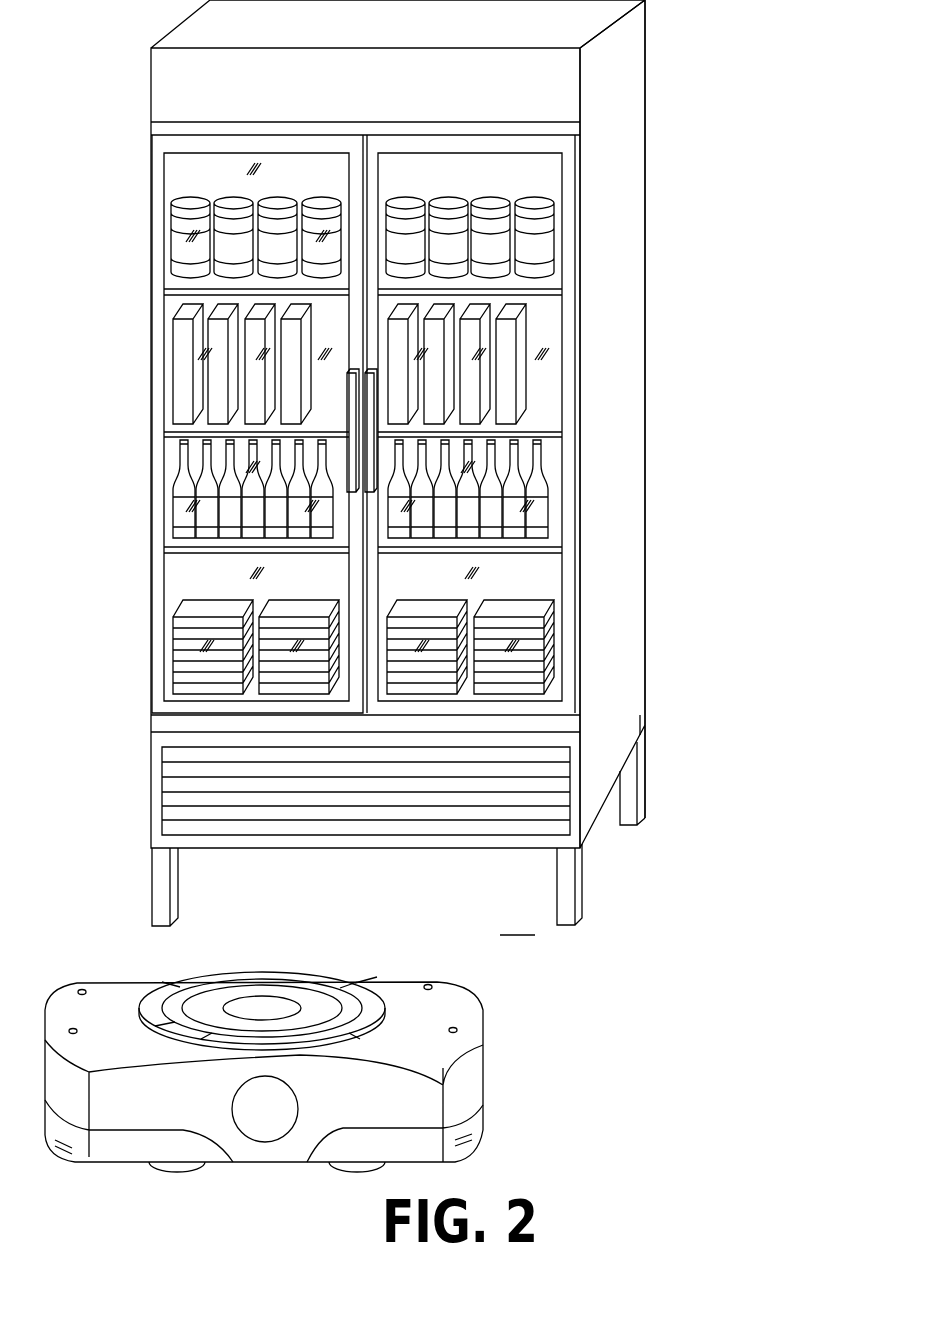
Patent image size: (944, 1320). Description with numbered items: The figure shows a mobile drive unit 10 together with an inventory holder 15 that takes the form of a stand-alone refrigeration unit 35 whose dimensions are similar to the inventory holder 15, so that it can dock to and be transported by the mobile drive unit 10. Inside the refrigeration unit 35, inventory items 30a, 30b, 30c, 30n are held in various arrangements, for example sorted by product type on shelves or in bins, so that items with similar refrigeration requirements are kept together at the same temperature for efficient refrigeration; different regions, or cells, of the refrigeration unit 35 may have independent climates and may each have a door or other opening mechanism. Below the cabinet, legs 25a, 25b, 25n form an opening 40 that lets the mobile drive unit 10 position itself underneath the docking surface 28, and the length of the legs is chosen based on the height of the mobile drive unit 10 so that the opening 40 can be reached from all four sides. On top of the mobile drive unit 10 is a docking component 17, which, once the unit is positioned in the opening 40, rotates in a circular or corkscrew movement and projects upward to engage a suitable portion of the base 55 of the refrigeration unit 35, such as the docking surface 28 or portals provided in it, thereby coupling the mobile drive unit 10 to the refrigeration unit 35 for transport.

The mobile drive unit 10 is at (296, 1060).
The inventory holder 15 is at (431, 463).
The docking component 17 is at (279, 990).
The leg 25a is at (151, 899).
The leg 25b is at (583, 893).
The leg 25n is at (647, 792).
The docking surface 28 is at (349, 851).
The inventory item 30a is at (165, 273).
The inventory item 30b is at (165, 414).
The inventory item 30c is at (165, 523).
The inventory item 30n is at (165, 681).
The refrigeration unit 35 is at (645, 355).
The opening 40 is at (527, 938).
The base 55 is at (648, 722).